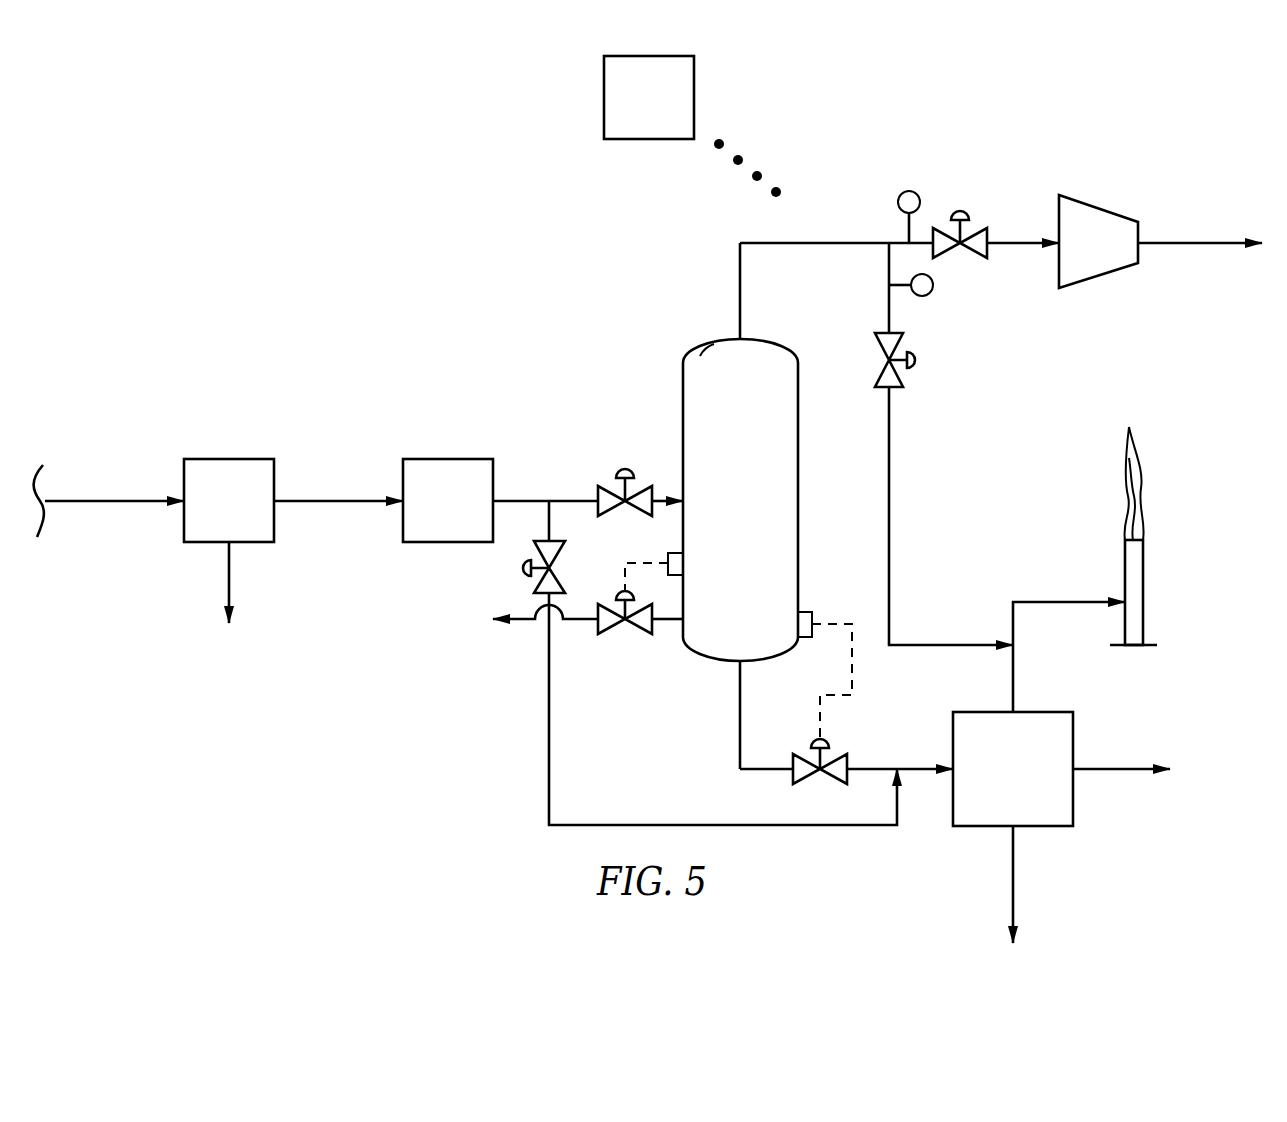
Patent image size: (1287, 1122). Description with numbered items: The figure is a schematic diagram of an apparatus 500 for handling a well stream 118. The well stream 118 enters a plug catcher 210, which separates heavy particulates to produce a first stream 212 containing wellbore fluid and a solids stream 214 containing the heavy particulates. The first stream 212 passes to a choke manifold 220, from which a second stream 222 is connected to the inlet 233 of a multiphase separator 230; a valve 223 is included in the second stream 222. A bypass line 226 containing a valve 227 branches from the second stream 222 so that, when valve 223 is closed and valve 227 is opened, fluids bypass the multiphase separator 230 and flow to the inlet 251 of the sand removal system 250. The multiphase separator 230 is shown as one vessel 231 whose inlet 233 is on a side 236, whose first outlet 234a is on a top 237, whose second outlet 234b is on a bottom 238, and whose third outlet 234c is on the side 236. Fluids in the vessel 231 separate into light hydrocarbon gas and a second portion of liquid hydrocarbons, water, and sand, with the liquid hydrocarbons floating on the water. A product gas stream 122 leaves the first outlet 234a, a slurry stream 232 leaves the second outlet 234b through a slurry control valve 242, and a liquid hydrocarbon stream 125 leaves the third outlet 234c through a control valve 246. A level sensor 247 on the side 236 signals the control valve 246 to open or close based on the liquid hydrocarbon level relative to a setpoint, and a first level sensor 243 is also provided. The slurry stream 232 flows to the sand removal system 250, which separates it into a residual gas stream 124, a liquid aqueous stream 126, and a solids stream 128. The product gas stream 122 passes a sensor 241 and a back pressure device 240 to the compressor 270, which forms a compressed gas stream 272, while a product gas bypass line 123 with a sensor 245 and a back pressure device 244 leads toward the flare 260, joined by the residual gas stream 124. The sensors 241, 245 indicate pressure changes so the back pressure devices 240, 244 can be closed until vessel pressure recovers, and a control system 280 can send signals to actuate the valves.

The apparatus 500 is at (275, 184).
The well stream 118 is at (110, 500).
The plug catcher 210 is at (245, 513).
The first stream 212 is at (328, 500).
The solids stream 214 is at (228, 575).
The choke manifold 220 is at (464, 513).
The second stream 222 is at (522, 500).
The inlet 233 is at (680, 498).
The valve 223 is at (630, 515).
The level sensor 247 is at (622, 566).
The multiphase separator 230 is at (756, 510).
The vessel 231 is at (702, 358).
The first outlet 234a is at (736, 338).
The top 237 is at (758, 339).
The side 236 is at (682, 400).
The third outlet 234c is at (683, 622).
The second outlet 234b is at (737, 664).
The bottom 238 is at (758, 665).
The slurry stream 232 is at (739, 716).
The first level sensor 243 is at (814, 613).
The valve 227 is at (530, 568).
The bypass line 226 is at (548, 736).
The control valve 246 is at (620, 632).
The liquid hydrocarbon stream 125 is at (524, 620).
The slurry control valve 242 is at (824, 776).
The inlet 251 is at (951, 767).
The sand removal system 250 is at (1029, 781).
The liquid aqueous stream 126 is at (1124, 768).
The solids stream 128 is at (1012, 884).
The residual gas stream 124 is at (1062, 604).
The flare 260 is at (1144, 553).
The product gas stream 122 is at (802, 242).
The sensor 241 is at (900, 196).
The back pressure device 240 is at (956, 250).
The sensor 245 is at (930, 294).
The back pressure device 244 is at (902, 378).
The product gas bypass line 123 is at (890, 461).
The compressor 270 is at (1110, 255).
The compressed gas stream 272 is at (1186, 241).
The control system 280 is at (665, 110).